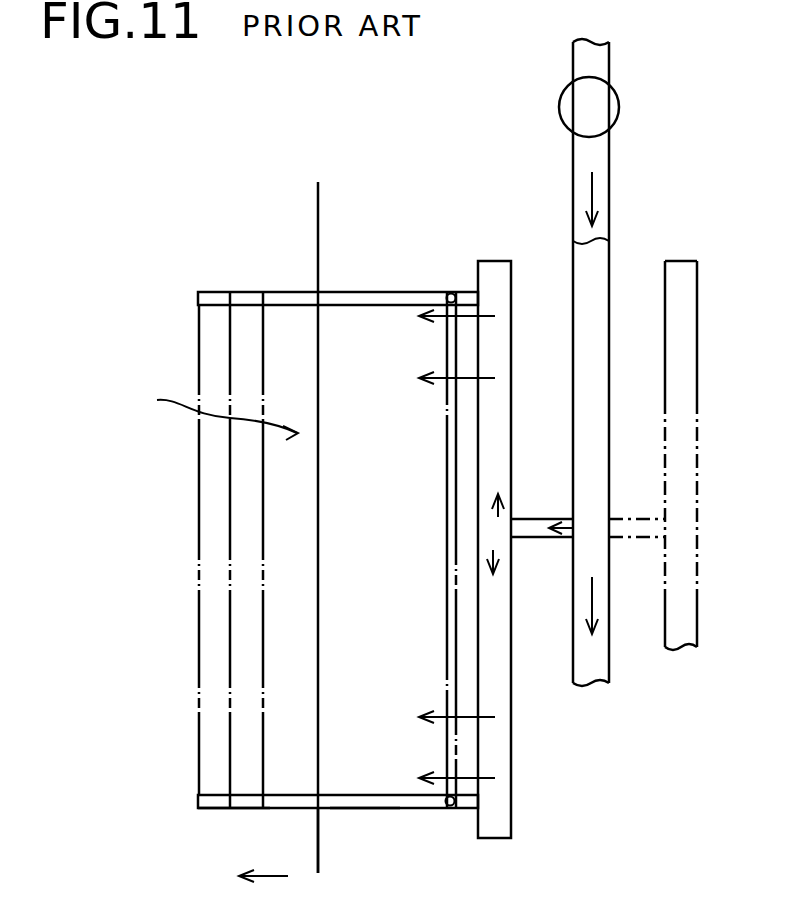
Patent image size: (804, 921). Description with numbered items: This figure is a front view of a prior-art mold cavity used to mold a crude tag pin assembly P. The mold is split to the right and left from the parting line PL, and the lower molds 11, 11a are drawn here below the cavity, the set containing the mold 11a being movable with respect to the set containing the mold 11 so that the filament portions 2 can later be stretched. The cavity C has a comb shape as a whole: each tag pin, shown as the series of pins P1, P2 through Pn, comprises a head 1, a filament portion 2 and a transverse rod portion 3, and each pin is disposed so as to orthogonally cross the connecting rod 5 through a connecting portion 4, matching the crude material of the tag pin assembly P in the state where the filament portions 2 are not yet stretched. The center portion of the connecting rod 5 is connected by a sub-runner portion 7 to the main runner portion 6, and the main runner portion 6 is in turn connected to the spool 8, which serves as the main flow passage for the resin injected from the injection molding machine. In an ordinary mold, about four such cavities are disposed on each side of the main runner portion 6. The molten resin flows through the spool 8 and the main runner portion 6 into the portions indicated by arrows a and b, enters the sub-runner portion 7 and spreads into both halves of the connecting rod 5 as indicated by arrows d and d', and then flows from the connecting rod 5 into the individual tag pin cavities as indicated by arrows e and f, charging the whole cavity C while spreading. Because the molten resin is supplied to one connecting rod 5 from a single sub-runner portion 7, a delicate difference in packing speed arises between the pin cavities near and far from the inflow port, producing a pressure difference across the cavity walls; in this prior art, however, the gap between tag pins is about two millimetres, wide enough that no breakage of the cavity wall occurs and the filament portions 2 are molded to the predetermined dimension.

The head 1 is at (218, 292).
The filament portion 2 is at (310, 292).
The transverse rod portion 3 is at (447, 292).
The connecting portion 4 is at (457, 292).
The connecting rod 5 is at (494, 268).
The main runner portion 6 is at (598, 268).
The sub-runner portion 7 is at (540, 519).
The spool 8 is at (611, 107).
The lower mold 11 is at (270, 830).
The lower mold 11a is at (352, 828).
The cavity C is at (360, 284).
The tag pin assembly P is at (213, 410).
The tag pin P1 is at (195, 803).
The tag pin P2 is at (198, 295).
The tag pin Pn is at (199, 530).
The parting line PL is at (317, 843).
The arrow a is at (592, 180).
The arrow b is at (590, 509).
The arrow d is at (443, 500).
The arrow d' is at (442, 560).
The arrow e is at (447, 378).
The arrow f is at (440, 320).